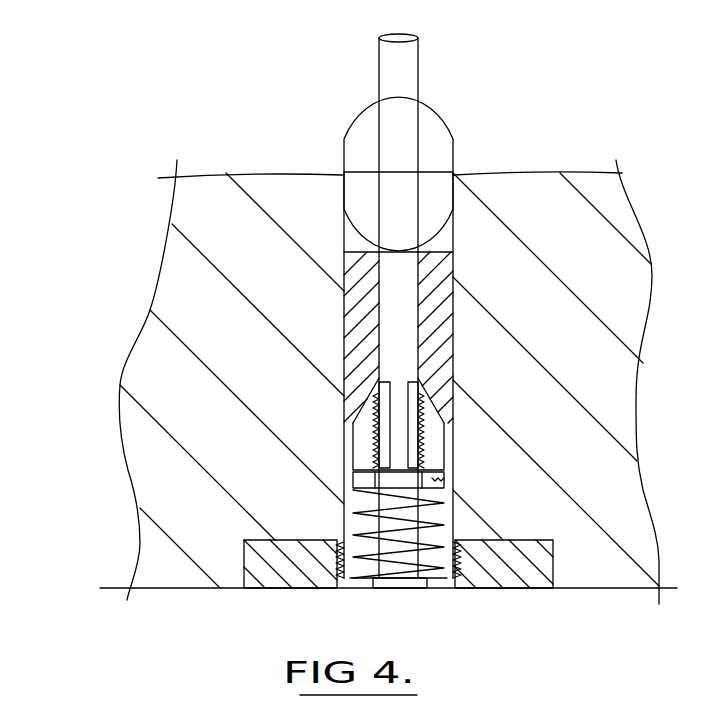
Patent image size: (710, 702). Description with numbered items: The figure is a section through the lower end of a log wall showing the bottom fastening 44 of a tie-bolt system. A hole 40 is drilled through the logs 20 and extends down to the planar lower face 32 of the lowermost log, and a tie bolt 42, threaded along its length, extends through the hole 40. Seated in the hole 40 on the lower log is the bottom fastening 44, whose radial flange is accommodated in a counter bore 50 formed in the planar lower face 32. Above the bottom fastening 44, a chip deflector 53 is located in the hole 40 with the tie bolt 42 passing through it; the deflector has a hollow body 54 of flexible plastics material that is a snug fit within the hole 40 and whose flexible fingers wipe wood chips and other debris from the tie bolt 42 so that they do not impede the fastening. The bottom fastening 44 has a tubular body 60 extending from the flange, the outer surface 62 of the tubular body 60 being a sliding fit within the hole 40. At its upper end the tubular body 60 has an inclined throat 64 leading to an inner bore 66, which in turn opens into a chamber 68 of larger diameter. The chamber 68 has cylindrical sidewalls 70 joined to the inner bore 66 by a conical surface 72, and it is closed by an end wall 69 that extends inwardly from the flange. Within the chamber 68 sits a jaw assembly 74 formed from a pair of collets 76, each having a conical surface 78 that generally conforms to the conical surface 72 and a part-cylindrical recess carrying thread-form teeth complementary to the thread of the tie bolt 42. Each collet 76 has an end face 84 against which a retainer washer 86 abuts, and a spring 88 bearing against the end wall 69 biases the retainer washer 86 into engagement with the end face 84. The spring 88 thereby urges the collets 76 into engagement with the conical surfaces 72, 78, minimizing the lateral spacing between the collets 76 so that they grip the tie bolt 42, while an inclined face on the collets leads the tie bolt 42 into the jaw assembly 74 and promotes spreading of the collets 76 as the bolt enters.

The log 20 is at (188, 208).
The planar lower face 32 is at (180, 592).
The hole 40 is at (453, 237).
The tie bolt 42 is at (376, 47).
The bottom fastening 44 is at (342, 343).
The counter bore 50 is at (243, 543).
The chip deflector 53 is at (341, 127).
The hollow body 54 is at (343, 152).
The tubular body 60 is at (347, 510).
The outer surface 62 is at (358, 375).
The inclined throat 64 is at (346, 253).
The inner bore 66 is at (358, 311).
The chamber 68 is at (438, 520).
The end wall 69 is at (445, 588).
The cylindrical sidewalls 70 is at (343, 527).
The conical surface 72 is at (470, 351).
The jaw assembly 74 is at (455, 425).
The collet 76 is at (360, 440).
The conical surface 78 is at (427, 383).
The end face 84 is at (445, 456).
The retainer washer 86 is at (442, 478).
The spring 88 is at (458, 526).